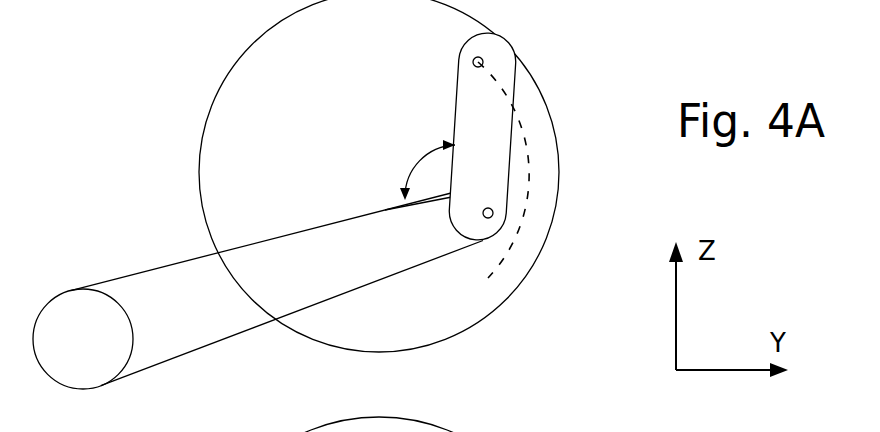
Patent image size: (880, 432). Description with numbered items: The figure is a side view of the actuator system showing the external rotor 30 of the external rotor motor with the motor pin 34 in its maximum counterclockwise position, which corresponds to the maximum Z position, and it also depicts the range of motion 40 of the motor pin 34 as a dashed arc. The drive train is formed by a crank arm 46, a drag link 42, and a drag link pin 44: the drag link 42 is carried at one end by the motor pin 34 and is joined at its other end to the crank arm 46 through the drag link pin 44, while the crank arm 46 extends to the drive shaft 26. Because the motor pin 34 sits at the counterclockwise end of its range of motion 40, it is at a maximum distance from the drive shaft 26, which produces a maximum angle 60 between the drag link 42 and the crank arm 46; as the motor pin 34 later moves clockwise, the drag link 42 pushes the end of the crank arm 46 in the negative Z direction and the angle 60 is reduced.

The drive shaft 26 is at (70, 347).
The external rotor 30 is at (272, 161).
The motor pin 34 is at (482, 57).
The range of motion 40 is at (500, 258).
The drag link 42 is at (469, 155).
The drag link pin 44 is at (485, 217).
The crank arm 46 is at (262, 293).
The angle 60 is at (425, 150).